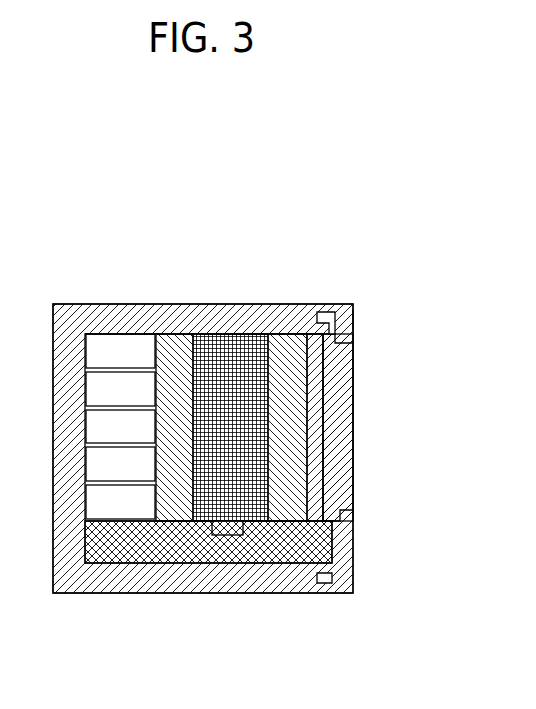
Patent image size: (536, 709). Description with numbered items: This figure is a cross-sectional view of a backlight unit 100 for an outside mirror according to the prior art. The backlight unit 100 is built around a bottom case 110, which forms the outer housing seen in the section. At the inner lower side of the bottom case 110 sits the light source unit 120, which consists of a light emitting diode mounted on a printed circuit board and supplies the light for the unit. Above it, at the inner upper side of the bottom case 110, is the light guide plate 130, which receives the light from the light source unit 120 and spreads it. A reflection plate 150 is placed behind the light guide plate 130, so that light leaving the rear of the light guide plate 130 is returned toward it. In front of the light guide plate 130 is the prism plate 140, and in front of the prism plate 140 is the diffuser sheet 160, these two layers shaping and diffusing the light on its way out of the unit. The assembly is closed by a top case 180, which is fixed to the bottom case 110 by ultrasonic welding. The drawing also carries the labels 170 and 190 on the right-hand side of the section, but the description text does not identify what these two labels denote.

The backlight unit 100 is at (308, 238).
The bottom case 110 is at (98, 318).
The light source unit 120 is at (268, 548).
The light guide plate 130 is at (228, 348).
The prism plate 140 is at (290, 345).
The reflection plate 150 is at (178, 345).
The diffuser sheet 160 is at (313, 436).
The side wall 170 is at (335, 387).
The top case 180 is at (341, 306).
The outer surface of housing 190 is at (354, 320).